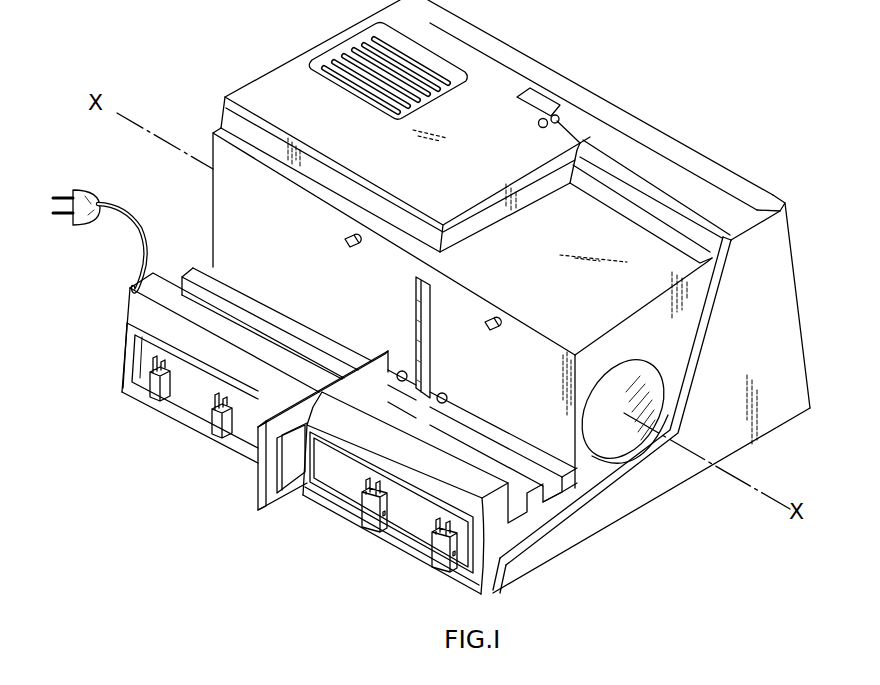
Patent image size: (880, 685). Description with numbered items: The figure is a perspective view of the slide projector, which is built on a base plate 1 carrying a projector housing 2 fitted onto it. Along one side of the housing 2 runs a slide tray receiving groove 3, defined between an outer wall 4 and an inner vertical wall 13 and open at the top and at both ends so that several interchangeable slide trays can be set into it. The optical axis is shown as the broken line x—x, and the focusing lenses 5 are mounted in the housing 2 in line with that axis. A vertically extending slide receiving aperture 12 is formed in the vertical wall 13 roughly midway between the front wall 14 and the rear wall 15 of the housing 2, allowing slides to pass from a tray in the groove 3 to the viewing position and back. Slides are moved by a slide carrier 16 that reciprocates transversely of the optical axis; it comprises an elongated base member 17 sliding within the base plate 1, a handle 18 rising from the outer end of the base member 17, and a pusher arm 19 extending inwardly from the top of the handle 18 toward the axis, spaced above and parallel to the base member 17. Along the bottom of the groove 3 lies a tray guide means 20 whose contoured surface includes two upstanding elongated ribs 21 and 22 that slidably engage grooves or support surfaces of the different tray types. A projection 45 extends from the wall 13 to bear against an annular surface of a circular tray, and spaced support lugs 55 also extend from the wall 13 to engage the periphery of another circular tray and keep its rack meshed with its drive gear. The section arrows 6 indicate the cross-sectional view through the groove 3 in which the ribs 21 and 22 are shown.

The base plate 1 is at (167, 408).
The projector housing 2 is at (477, 108).
The slide tray receiving groove 3 is at (203, 275).
The wall 4 is at (128, 307).
The focusing lenses 5 is at (642, 367).
The section line 6 is at (252, 492).
The slide receiving aperture 12 is at (416, 311).
The vertical wall 13 is at (221, 147).
The front wall 14 is at (777, 247).
The rear wall 15 is at (271, 73).
The slide carrier 16 is at (239, 489).
The elongated base member 17 is at (282, 498).
The handle 18 is at (257, 478).
The pusher arm 19 is at (380, 350).
The tray guide means 20 is at (450, 410).
The rib 21 is at (553, 491).
The rib 22 is at (523, 512).
The projection 45 is at (343, 245).
The support lugs 55 is at (405, 370).